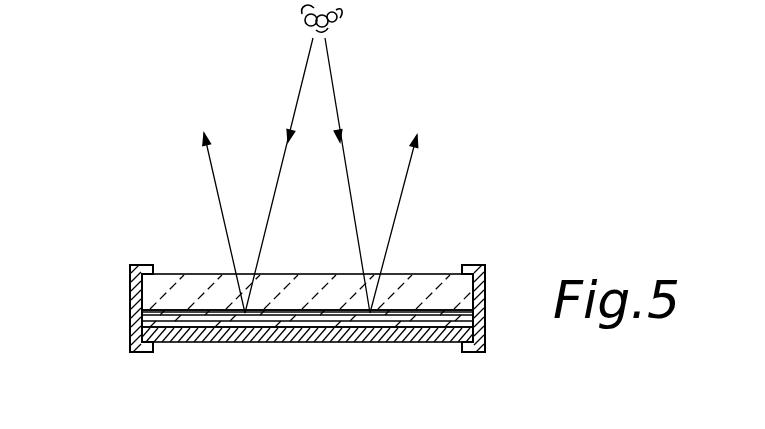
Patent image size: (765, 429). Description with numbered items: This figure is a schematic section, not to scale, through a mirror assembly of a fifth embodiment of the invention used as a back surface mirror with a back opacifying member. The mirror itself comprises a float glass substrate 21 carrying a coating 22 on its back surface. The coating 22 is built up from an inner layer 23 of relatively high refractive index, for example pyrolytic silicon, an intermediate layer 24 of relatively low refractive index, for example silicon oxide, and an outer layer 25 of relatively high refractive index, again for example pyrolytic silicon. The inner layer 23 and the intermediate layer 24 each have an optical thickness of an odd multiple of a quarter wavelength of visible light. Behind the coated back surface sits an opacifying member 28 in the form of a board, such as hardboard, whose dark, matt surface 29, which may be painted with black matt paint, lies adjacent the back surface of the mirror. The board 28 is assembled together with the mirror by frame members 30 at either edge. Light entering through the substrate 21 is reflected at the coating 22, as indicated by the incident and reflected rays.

The float glass substrate 21 is at (423, 278).
The coating 22 is at (125, 319).
The inner layer 23 is at (182, 320).
The intermediate layer 24 is at (233, 318).
The outer layer 25 is at (388, 318).
The opacifying member 28 is at (443, 330).
The dark, matt surface 29 is at (330, 322).
The frame members 30 is at (133, 272).